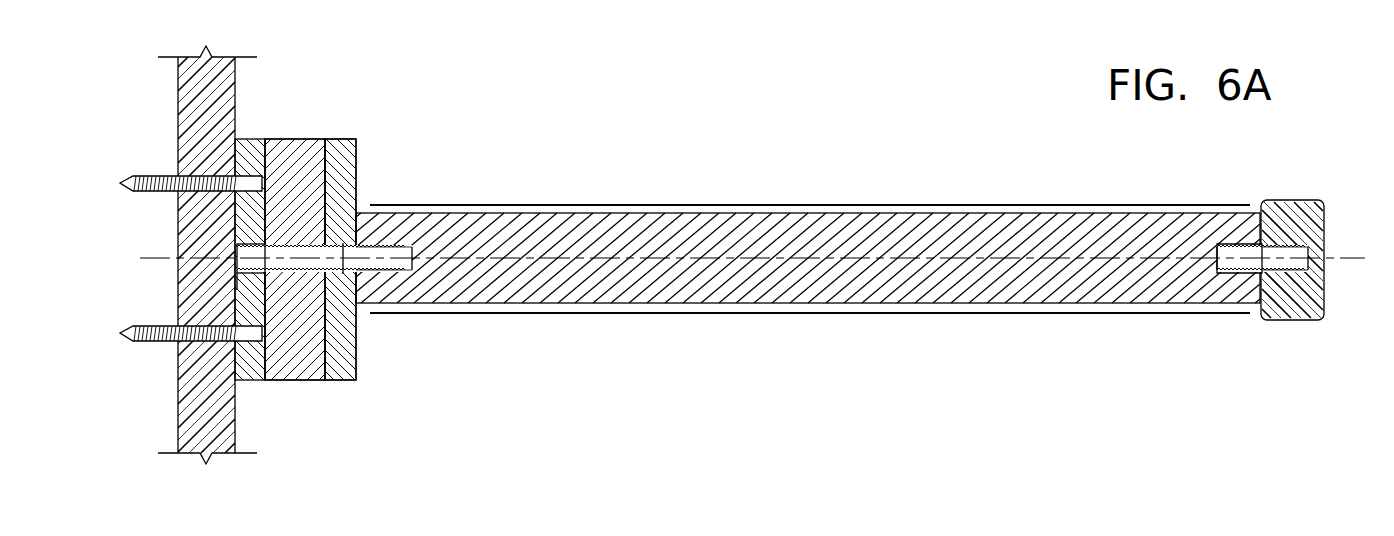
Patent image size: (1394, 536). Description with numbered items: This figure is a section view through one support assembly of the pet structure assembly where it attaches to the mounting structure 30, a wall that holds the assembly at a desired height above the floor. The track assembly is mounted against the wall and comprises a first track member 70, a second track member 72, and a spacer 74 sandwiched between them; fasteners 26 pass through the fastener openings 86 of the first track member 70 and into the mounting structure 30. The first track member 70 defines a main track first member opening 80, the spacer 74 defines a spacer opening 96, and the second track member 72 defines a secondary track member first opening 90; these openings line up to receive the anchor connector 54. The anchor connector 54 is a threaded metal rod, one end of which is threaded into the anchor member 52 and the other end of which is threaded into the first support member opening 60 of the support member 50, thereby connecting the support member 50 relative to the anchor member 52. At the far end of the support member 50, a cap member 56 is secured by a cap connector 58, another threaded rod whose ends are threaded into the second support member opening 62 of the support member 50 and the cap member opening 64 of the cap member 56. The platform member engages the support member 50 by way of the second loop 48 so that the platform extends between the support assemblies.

The mounting structure 30 is at (203, 102).
The fastener 26 is at (158, 177).
The anchor member 52 is at (240, 245).
The main track first member opening 80 is at (240, 303).
The fastener opening 86 is at (249, 165).
The first track member 70 is at (262, 210).
The spacer 74 is at (300, 365).
The second track member 72 is at (353, 378).
The spacer opening 96 is at (350, 340).
The secondary track member first opening 90 is at (343, 243).
The anchor connector 54 is at (408, 247).
The first support member opening 60 is at (377, 270).
The second loop 48 is at (822, 205).
The support member 50 is at (905, 230).
The cap member 56 is at (1290, 207).
The cap connector 58 is at (1308, 248).
The second support member opening 62 is at (1235, 270).
The cap member opening 64 is at (1290, 300).